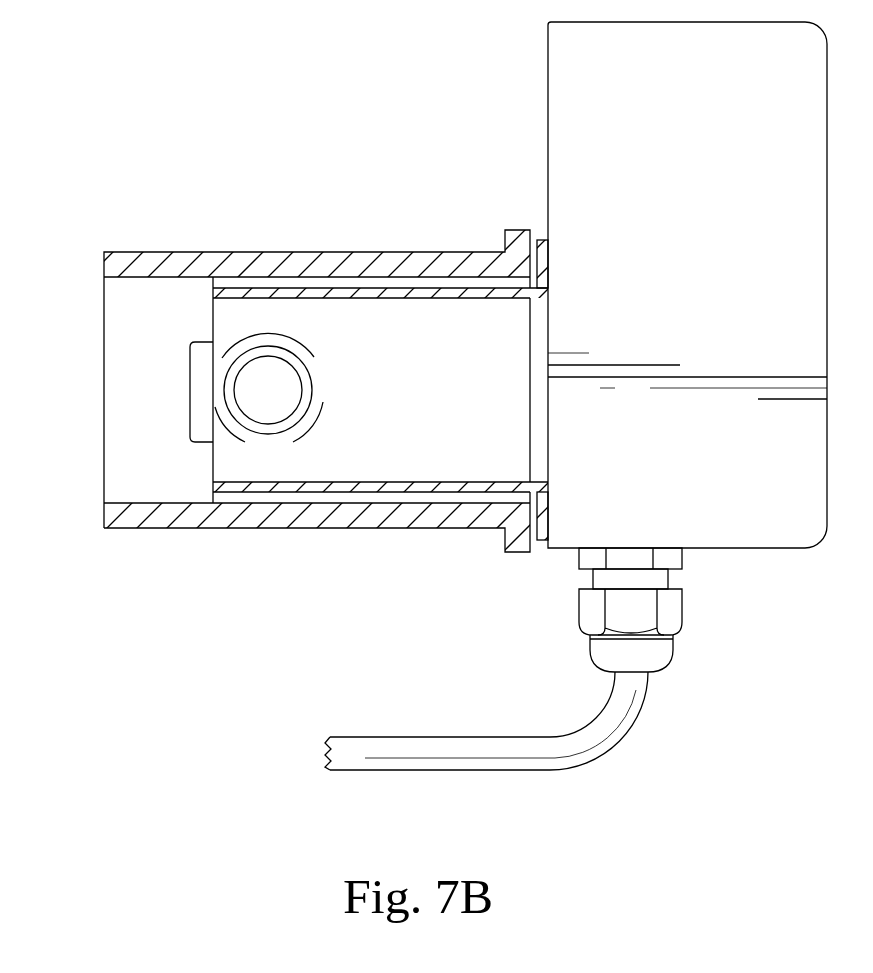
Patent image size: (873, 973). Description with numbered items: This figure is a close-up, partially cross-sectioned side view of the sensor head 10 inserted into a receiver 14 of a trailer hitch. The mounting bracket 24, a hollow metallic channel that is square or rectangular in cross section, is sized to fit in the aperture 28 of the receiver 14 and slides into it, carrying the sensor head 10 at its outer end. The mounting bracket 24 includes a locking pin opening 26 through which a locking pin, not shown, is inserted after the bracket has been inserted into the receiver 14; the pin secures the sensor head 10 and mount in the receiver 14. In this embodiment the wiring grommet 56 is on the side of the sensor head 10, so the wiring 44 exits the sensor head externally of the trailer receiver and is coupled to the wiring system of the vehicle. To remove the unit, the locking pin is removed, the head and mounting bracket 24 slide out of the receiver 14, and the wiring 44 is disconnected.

The sensor head 10 is at (703, 174).
The receiver 14 is at (150, 268).
The mounting bracket 24 is at (442, 455).
The locking pin opening 26 is at (302, 377).
The aperture 28 is at (34, 277).
The wiring 44 is at (613, 735).
The wiring grommet 56 is at (670, 612).